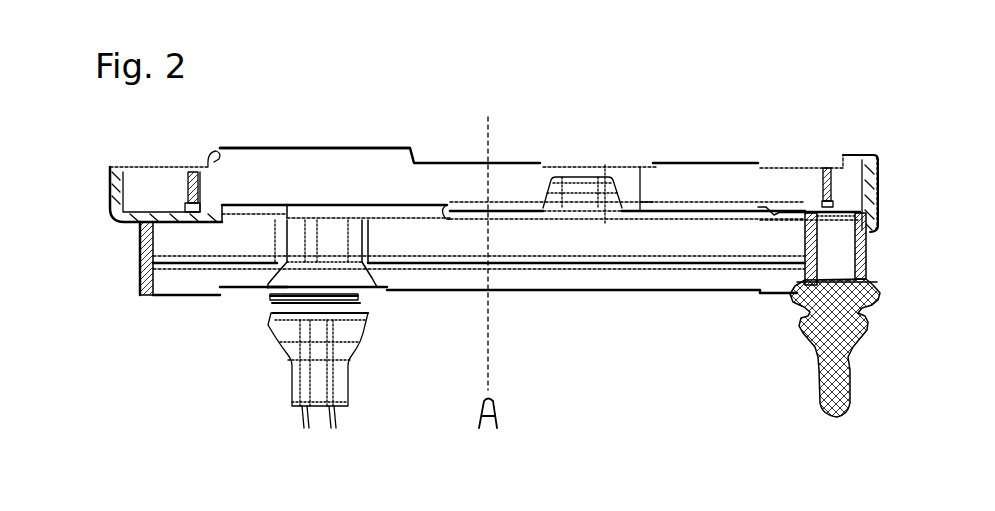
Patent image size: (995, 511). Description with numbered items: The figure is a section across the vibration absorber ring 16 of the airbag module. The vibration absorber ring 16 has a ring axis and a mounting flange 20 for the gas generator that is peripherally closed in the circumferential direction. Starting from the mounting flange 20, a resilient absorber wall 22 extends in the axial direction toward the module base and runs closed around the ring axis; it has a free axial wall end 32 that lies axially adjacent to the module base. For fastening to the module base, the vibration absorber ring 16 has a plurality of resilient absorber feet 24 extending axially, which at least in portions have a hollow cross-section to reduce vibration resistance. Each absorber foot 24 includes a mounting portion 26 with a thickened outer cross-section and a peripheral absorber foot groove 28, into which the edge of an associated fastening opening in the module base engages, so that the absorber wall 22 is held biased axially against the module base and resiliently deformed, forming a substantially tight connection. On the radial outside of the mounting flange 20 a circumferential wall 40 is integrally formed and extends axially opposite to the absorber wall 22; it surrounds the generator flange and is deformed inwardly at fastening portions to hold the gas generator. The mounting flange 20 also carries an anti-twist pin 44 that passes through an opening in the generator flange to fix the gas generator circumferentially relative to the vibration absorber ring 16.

The vibration absorber ring 16 is at (770, 121).
The mounting flange 20 is at (172, 215).
The absorber wall 22 is at (145, 253).
The absorber feet 24 is at (262, 357).
The mounting portion 26 is at (353, 318).
The absorber foot groove 28 is at (366, 301).
The free axial wall end 32 is at (150, 300).
The circumferential wall 40 is at (122, 195).
The anti-twist pin 44 is at (580, 184).